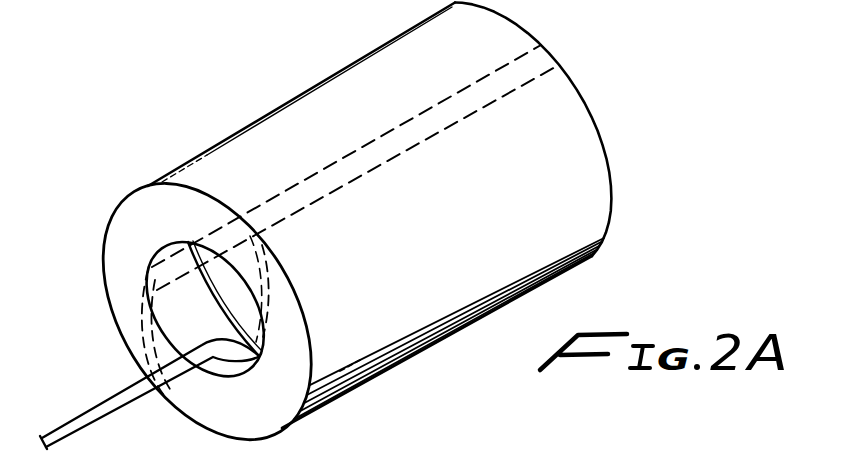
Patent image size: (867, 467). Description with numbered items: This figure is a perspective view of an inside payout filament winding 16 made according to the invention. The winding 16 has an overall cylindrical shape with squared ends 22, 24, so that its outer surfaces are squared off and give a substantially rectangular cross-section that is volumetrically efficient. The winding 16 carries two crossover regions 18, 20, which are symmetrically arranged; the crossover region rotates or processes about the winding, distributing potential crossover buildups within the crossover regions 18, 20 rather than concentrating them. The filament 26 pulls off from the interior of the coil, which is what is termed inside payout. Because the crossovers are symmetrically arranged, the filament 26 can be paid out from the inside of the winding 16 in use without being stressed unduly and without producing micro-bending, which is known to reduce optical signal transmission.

The inside payout winding 16 is at (263, 91).
The crossover region 18 is at (543, 49).
The crossover region 20 is at (166, 402).
The squared end 22 is at (147, 225).
The squared end 24 is at (611, 208).
The filament 26 is at (75, 420).